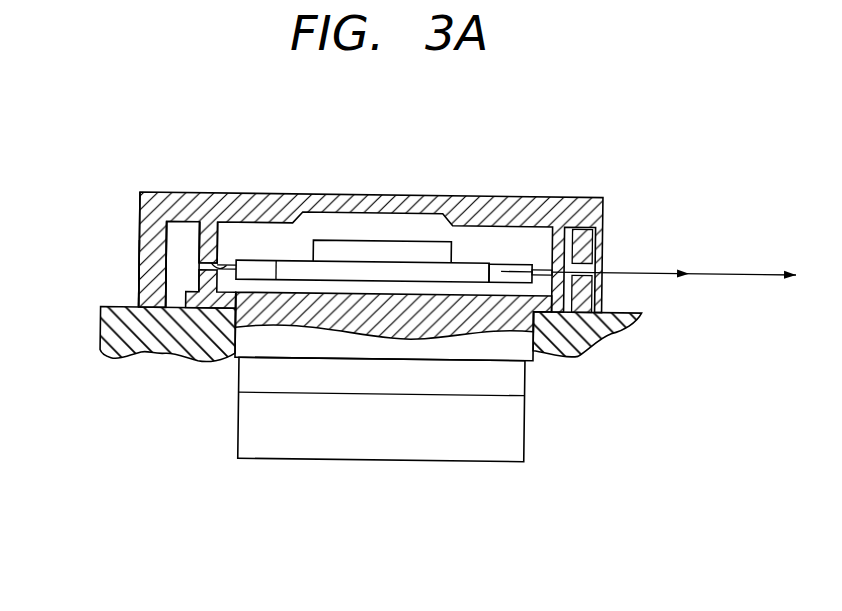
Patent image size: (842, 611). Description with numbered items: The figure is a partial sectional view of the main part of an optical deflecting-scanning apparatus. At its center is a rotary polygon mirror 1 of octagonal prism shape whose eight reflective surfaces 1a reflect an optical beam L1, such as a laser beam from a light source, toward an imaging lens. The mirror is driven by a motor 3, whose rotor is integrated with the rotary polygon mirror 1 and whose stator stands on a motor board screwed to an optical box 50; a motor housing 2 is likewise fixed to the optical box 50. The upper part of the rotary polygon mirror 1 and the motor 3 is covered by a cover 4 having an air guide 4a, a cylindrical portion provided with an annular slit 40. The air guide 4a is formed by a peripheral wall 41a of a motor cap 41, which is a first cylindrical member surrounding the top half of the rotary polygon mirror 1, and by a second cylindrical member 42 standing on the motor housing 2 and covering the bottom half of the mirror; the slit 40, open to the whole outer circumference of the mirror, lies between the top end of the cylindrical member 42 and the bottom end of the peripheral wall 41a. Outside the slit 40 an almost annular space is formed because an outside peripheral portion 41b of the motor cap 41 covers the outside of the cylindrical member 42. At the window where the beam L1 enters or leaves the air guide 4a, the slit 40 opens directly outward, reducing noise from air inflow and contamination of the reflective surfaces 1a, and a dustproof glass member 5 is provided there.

The rotary polygon mirror 1 is at (479, 257).
The reflective surfaces 1a is at (458, 266).
The motor housing 2 is at (278, 343).
The motor 3 is at (258, 285).
The cover 4 is at (368, 191).
The air guide 4a is at (175, 240).
The dustproof glass member 5 is at (604, 235).
The slit 40 is at (232, 258).
The motor cap 41 is at (157, 195).
The peripheral wall 41a is at (202, 238).
The outside peripheral portion 41b is at (147, 257).
The second cylindrical member 42 is at (200, 284).
The optical box 50 is at (598, 348).
The optical beam L1 is at (750, 273).